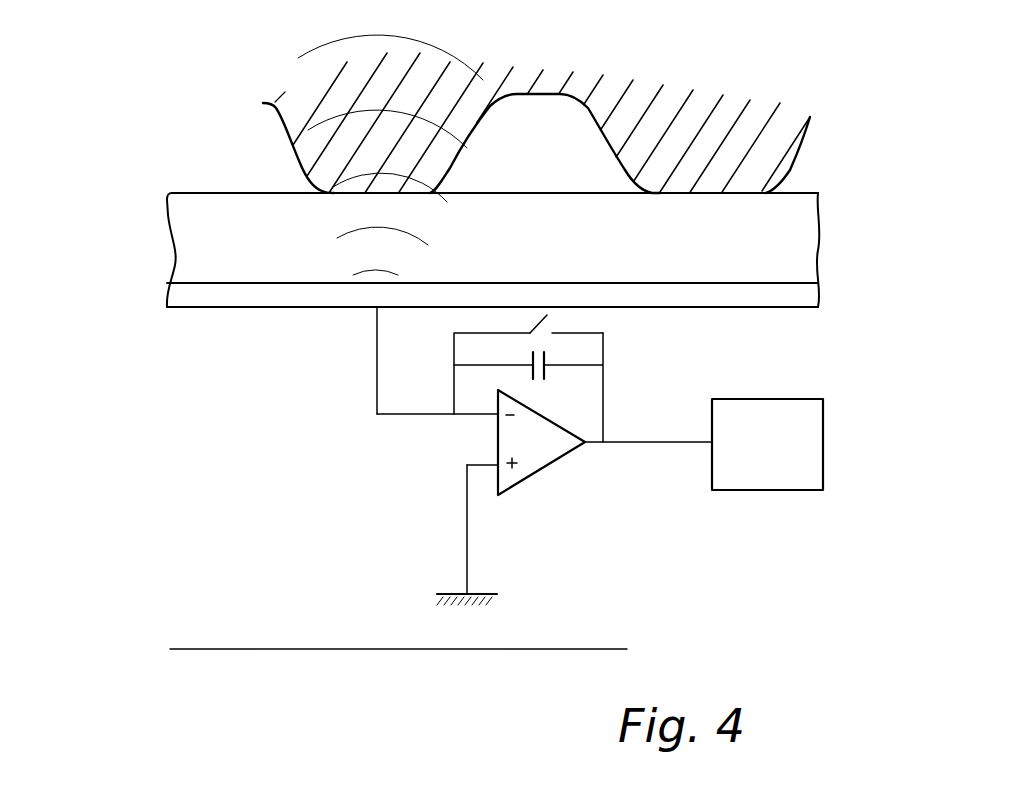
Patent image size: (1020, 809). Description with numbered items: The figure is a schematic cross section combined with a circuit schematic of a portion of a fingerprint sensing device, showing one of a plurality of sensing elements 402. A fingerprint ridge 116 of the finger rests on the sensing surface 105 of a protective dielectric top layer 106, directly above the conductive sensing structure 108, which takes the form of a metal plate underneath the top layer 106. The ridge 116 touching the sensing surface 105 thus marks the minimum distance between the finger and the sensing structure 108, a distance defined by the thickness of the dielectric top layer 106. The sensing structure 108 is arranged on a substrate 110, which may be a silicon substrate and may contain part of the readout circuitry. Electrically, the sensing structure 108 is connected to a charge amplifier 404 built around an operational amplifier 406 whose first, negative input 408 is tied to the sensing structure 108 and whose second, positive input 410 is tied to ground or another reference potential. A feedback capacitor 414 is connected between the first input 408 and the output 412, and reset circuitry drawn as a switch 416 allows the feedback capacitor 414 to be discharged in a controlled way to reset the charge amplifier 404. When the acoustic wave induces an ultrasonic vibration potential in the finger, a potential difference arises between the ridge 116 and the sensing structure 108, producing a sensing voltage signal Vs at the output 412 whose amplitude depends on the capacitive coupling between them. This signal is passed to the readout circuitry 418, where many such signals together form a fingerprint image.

The sensing surface 105 is at (197, 192).
The protective dielectric top layer 106 is at (187, 218).
The sensing structure 108 is at (348, 307).
The substrate 110 is at (174, 499).
The fingerprint ridge 116 is at (450, 172).
The sensing element 402 is at (652, 298).
The charge amplifier 404 is at (397, 530).
The operational amplifier 406 is at (535, 470).
The first input 408 is at (498, 418).
The second input 410 is at (463, 466).
The output 412 is at (585, 442).
The feedback capacitor 414 is at (547, 365).
The switch 416 is at (535, 334).
The readout circuitry 418 is at (780, 399).